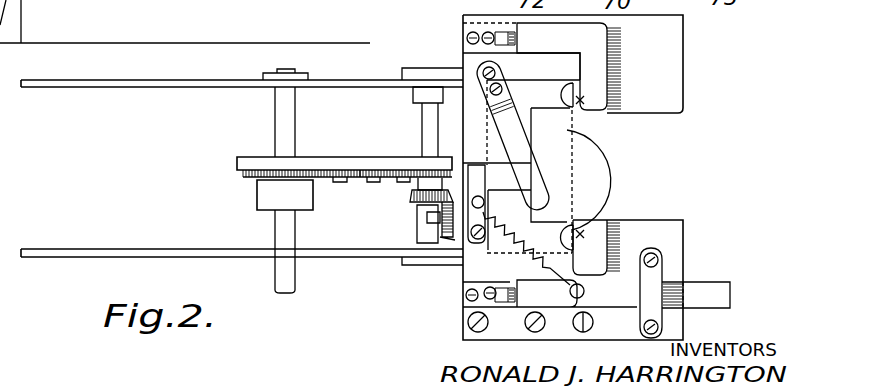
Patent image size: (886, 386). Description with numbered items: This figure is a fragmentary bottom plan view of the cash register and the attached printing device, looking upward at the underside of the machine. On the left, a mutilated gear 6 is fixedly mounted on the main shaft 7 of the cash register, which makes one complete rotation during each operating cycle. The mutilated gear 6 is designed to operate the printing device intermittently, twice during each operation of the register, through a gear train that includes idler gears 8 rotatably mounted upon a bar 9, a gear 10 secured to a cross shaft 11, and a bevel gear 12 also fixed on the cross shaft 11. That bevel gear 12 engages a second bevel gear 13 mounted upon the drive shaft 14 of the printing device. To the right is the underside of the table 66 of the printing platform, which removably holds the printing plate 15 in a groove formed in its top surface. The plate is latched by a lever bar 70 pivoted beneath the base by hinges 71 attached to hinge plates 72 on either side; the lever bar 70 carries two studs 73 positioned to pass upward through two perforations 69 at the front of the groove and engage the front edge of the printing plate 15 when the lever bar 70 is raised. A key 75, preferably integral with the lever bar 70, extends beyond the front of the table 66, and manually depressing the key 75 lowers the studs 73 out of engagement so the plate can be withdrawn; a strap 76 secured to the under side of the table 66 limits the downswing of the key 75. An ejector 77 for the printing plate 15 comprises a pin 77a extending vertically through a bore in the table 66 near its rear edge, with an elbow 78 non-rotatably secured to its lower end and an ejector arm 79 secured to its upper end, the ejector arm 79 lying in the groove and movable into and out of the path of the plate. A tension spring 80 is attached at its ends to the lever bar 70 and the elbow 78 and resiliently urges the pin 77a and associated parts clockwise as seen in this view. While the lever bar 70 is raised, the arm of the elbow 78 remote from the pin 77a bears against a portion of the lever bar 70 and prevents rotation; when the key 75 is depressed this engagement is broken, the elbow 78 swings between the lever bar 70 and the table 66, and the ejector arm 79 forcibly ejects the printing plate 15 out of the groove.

The mutilated gear 6 is at (262, 178).
The main shaft 7 is at (285, 235).
The idler gears 8 is at (396, 178).
The bar 9 is at (308, 160).
The gear 10 is at (425, 170).
The cross shaft 11 is at (428, 117).
The bevel gear 12 is at (413, 198).
The bevel gear 13 is at (437, 233).
The drive shaft 14 is at (440, 218).
The printing plate 15 is at (567, 170).
The table 66 is at (683, 67).
The perforations 69 is at (580, 112).
The lever bar 70 is at (605, 48).
The hinges 71 is at (458, 3).
The hinge plates 72 is at (508, 5).
The studs 73 is at (582, 97).
The key 75 is at (718, 288).
The strap 76 is at (650, 278).
The ejector 77 is at (487, 203).
The pin 77a is at (476, 236).
The elbow 78 is at (507, 172).
The ejector arm 79 is at (475, 160).
The tension spring 80 is at (515, 240).